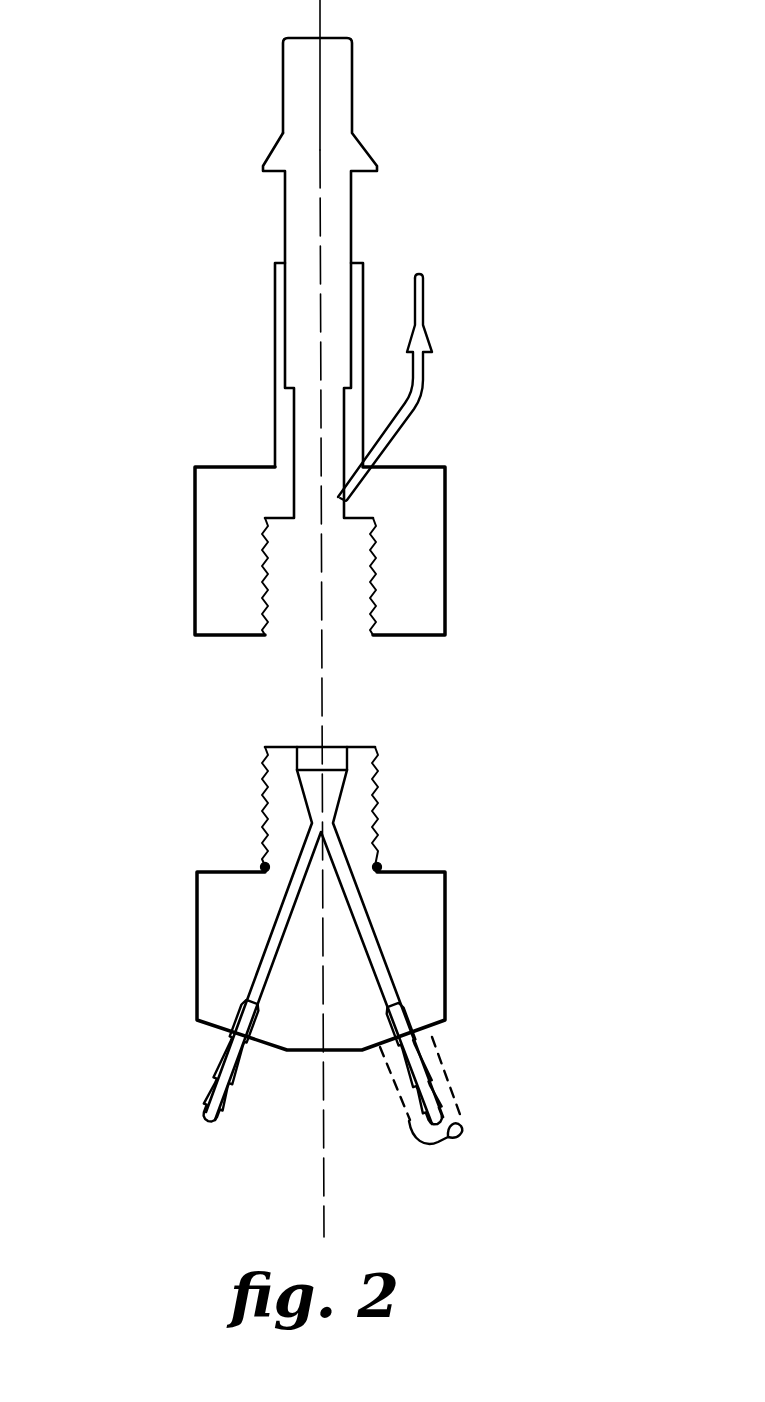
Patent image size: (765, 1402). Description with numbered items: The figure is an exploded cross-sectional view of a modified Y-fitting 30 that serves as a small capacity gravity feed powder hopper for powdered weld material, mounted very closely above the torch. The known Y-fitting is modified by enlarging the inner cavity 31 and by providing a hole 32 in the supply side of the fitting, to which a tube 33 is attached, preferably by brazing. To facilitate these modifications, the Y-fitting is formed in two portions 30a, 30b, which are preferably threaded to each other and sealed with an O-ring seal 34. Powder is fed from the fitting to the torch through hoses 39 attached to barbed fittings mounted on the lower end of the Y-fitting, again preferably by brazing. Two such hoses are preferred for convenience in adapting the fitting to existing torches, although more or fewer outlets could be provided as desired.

The modified Y-fitting 30 is at (380, 274).
The upper portion of Y-fitting 30a is at (275, 412).
The lower portion of Y-fitting 30b is at (197, 948).
The inner cavity 31 is at (308, 505).
The hole 32 is at (347, 492).
The tube 33 is at (403, 423).
The O-ring seal 34 is at (262, 866).
The hoses 39 is at (440, 1058).